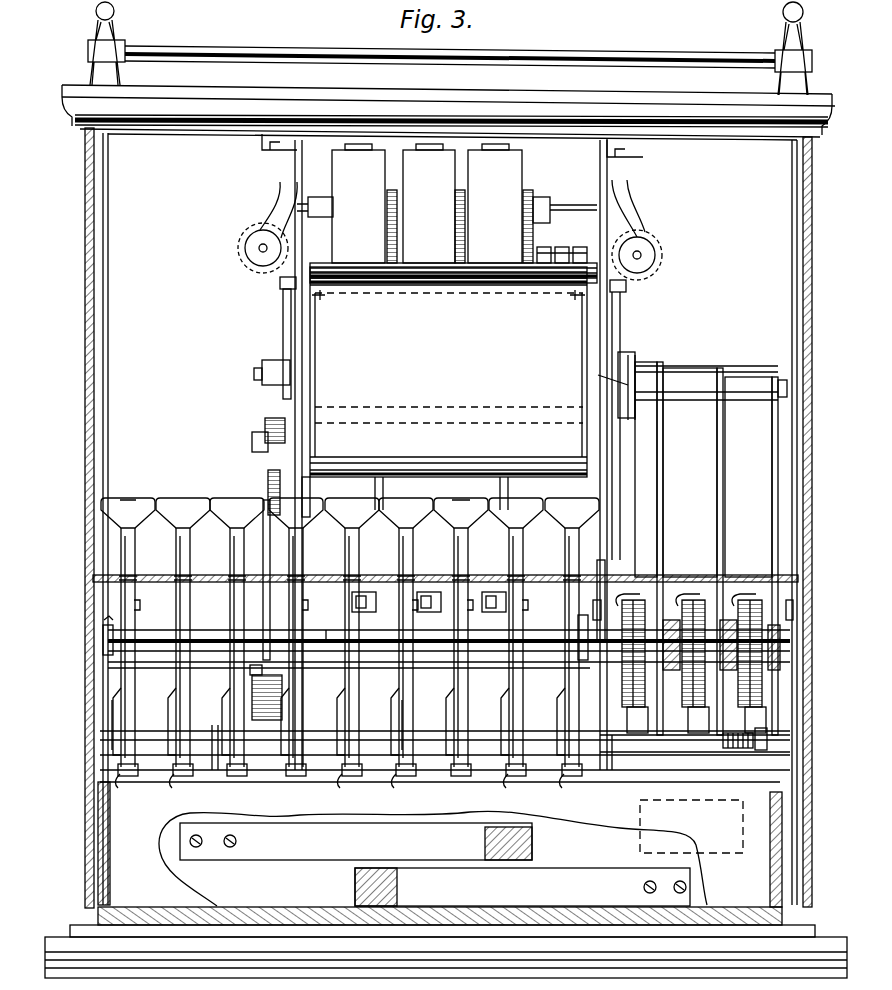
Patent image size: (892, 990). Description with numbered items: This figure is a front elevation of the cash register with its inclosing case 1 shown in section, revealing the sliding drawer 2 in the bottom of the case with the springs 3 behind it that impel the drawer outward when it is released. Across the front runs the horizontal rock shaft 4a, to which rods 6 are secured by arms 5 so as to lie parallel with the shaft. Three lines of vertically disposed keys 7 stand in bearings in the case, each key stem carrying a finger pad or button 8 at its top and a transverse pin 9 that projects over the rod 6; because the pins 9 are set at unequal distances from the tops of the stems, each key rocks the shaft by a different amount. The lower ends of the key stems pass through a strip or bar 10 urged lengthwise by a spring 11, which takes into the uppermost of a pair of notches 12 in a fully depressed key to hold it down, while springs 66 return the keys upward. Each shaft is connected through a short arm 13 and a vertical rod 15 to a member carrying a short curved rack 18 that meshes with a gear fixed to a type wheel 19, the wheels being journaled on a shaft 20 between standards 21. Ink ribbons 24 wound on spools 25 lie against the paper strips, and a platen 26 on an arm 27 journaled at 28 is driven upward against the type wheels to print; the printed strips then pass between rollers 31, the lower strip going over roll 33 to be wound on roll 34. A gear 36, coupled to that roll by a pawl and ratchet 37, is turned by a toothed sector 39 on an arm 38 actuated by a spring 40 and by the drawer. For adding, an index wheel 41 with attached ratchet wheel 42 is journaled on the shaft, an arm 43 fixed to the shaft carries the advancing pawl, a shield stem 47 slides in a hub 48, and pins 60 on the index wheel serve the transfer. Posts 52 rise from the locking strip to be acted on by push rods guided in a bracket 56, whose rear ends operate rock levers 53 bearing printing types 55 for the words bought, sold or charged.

The inclosing case 1 is at (86, 432).
The sliding drawer 2 is at (105, 880).
The springs 3 is at (435, 864).
The rock shaft 4a is at (349, 671).
The arms 5 is at (578, 628).
The rods 6 is at (320, 627).
The keys 7 is at (190, 560).
The finger pad or button 8 is at (142, 500).
The transverse pin 9 is at (135, 600).
The strip or bar 10 is at (409, 740).
The spring 11 is at (738, 748).
The notches 12 is at (122, 700).
The short arm 13 is at (429, 610).
The vertical rod 15 is at (383, 488).
The short curved rack 18 is at (450, 288).
The type wheel 19 is at (332, 176).
The shaft 20 is at (447, 224).
The standards 21 is at (294, 408).
The ink ribbon 24 is at (276, 289).
The spools 25 is at (244, 260).
The platen 26 is at (626, 288).
The arm 27 is at (283, 327).
The journal 28 is at (266, 366).
The rollers 31 is at (350, 282).
The roll 33 is at (535, 402).
The roll 34 is at (323, 497).
The gear 36 is at (266, 426).
The pawl and ratchet 37 is at (252, 438).
The arm 38 is at (263, 590).
The toothed sector 39 is at (268, 490).
The spring 40 is at (687, 622).
The index wheel 41 is at (686, 595).
The ratchet wheel 42 is at (648, 714).
The arm 43 is at (757, 750).
The stem 47 is at (645, 696).
The hub 48 is at (644, 748).
The vertical stems or posts 52 is at (804, 644).
The rock lever 53 is at (772, 478).
The printing types 55 is at (552, 252).
The bracket 56 is at (282, 712).
The pins 60 is at (622, 690).
The springs 66 is at (341, 778).